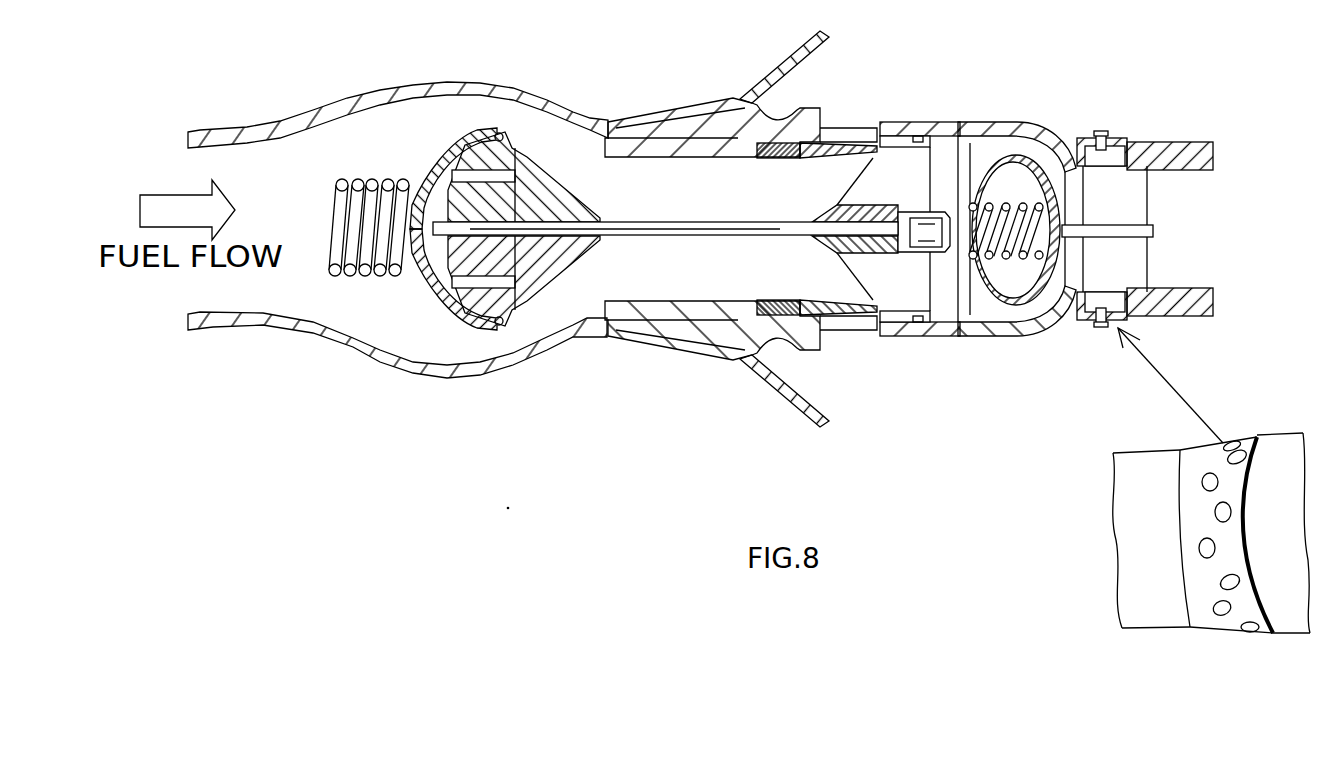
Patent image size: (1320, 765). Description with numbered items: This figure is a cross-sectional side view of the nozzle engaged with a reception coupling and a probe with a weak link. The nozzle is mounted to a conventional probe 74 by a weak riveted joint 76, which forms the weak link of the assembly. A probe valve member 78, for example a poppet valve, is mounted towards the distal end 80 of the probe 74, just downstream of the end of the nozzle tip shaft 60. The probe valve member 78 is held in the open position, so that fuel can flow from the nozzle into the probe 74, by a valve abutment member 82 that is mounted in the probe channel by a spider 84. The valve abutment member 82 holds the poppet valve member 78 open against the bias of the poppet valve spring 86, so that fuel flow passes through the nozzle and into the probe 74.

The nozzle tip shaft 60 is at (752, 234).
The probe 74 is at (1214, 129).
The weak riveted joint 76 is at (1106, 120).
The probe valve member 78 is at (993, 293).
The distal end 80 is at (912, 128).
The valve abutment member 82 is at (1153, 231).
The spider 84 is at (1127, 267).
The poppet valve spring 86 is at (1023, 257).